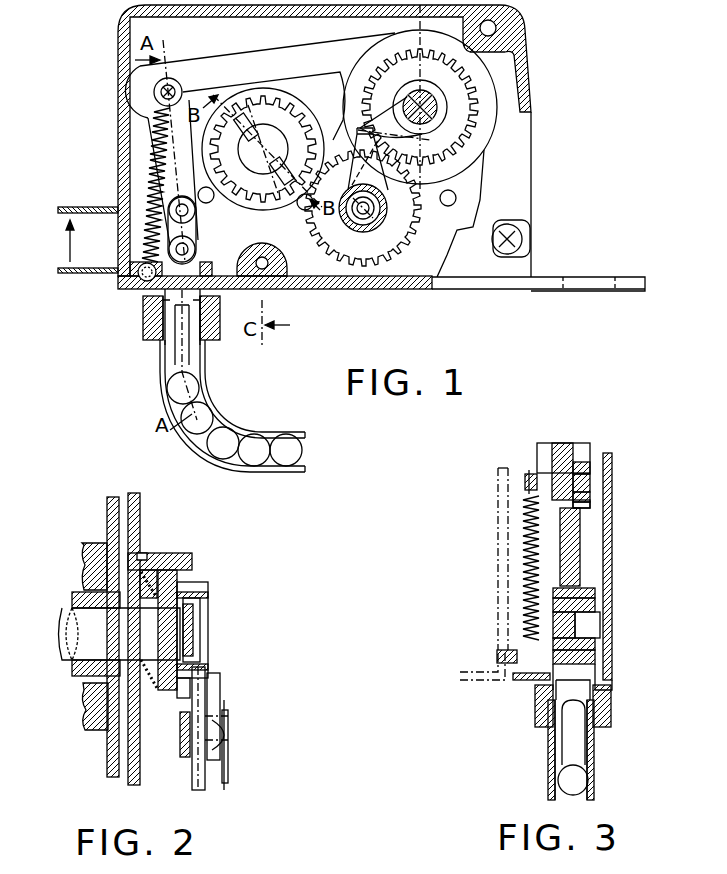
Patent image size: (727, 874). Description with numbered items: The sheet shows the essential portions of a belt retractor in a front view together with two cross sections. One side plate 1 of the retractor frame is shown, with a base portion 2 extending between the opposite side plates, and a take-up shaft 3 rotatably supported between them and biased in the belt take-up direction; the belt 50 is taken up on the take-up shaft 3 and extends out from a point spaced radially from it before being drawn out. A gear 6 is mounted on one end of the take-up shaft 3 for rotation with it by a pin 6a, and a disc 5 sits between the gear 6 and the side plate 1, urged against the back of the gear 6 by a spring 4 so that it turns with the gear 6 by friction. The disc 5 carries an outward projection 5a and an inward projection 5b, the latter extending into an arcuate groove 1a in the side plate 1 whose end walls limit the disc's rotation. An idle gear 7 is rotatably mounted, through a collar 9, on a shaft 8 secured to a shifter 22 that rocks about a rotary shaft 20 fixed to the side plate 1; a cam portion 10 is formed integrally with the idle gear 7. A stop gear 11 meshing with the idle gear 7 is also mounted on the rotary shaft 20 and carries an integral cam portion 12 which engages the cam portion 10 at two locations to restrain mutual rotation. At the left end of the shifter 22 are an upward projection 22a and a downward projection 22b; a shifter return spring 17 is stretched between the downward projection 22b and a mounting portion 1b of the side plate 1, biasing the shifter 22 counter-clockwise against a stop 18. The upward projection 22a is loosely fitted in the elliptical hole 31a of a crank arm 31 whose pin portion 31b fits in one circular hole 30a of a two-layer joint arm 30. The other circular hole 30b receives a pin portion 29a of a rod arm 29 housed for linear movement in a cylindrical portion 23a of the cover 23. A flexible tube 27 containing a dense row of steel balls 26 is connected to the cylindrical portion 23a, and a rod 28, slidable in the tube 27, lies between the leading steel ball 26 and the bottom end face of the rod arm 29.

In FIG. 1, the side plate 1 is at (408, 268).
In FIG. 2, the side plate 1 is at (141, 503).
In FIG. 3, the side plate 1 is at (496, 527).
In FIG. 1, the arcuate groove 1a is at (276, 284).
In FIG. 2, the arcuate groove 1a is at (142, 556).
In FIG. 1, the mounting portion 1b is at (132, 272).
In FIG. 3, the mounting portion 1b is at (498, 650).
In FIG. 1, the base portion 2 is at (592, 292).
In FIG. 1, the take-up shaft 3 is at (268, 126).
In FIG. 2, the take-up shaft 3 is at (70, 635).
In FIG. 2, the spring 4 is at (152, 688).
In FIG. 1, the disc 5 is at (290, 108).
In FIG. 2, the disc 5 is at (165, 700).
In FIG. 1, the outward projection 5a is at (208, 203).
In FIG. 2, the outward projection 5a is at (188, 553).
In FIG. 2, the inward projection 5b is at (128, 558).
In FIG. 1, the gear 6 is at (256, 198).
In FIG. 2, the gear 6 is at (200, 588).
In FIG. 1, the pin 6a is at (243, 116).
In FIG. 2, the pin 6a is at (200, 618).
In FIG. 1, the idle gear 7 is at (418, 224).
In FIG. 2, the idle gear 7 is at (217, 775).
In FIG. 1, the shaft 8 is at (360, 220).
In FIG. 2, the shaft 8 is at (235, 712).
In FIG. 1, the collar 9 is at (376, 220).
In FIG. 1, the cam portion 10 is at (372, 174).
In FIG. 2, the cam portion 10 is at (222, 690).
In FIG. 1, the stop gear 11 is at (432, 100).
In FIG. 1, the cam portion 12 is at (373, 125).
In FIG. 1, the shifter return spring 17 is at (160, 128).
In FIG. 3, the shifter return spring 17 is at (525, 562).
In FIG. 1, the stop 18 is at (456, 197).
In FIG. 1, the rotary shaft 20 is at (404, 130).
In FIG. 1, the shifter 22 is at (243, 48).
In FIG. 2, the shifter 22 is at (230, 770).
In FIG. 3, the shifter 22 is at (563, 444).
In FIG. 1, the upward projection 22a is at (154, 92).
In FIG. 3, the upward projection 22a is at (590, 486).
In FIG. 3, the downward projection 22b is at (537, 476).
In FIG. 1, the cover 23 is at (520, 66).
In FIG. 3, the cover 23 is at (614, 533).
In FIG. 1, the cylindrical portion 23a is at (150, 304).
In FIG. 3, the cylindrical portion 23a is at (598, 675).
In FIG. 1, the steel balls 26 is at (192, 390).
In FIG. 3, the steel balls 26 is at (580, 780).
In FIG. 1, the flexible tube 27 is at (290, 436).
In FIG. 3, the flexible tube 27 is at (548, 772).
In FIG. 1, the rod 28 is at (178, 352).
In FIG. 3, the rod 28 is at (575, 745).
In FIG. 1, the rod arm 29 is at (203, 304).
In FIG. 3, the rod arm 29 is at (538, 700).
In FIG. 3, the pin portion 29a is at (590, 644).
In FIG. 1, the joint arm 30 is at (168, 231).
In FIG. 3, the joint arm 30 is at (600, 626).
In FIG. 3, the circular hole 30a is at (590, 596).
In FIG. 3, the circular hole 30b is at (598, 658).
In FIG. 1, the crank arm 31 is at (172, 160).
In FIG. 3, the crank arm 31 is at (582, 542).
In FIG. 1, the elliptical hole 31a is at (182, 90).
In FIG. 3, the elliptical hole 31a is at (590, 498).
In FIG. 3, the pin portion 31b is at (590, 605).
In FIG. 1, the belt 50 is at (78, 206).
In FIG. 2, the belt 50 is at (92, 727).